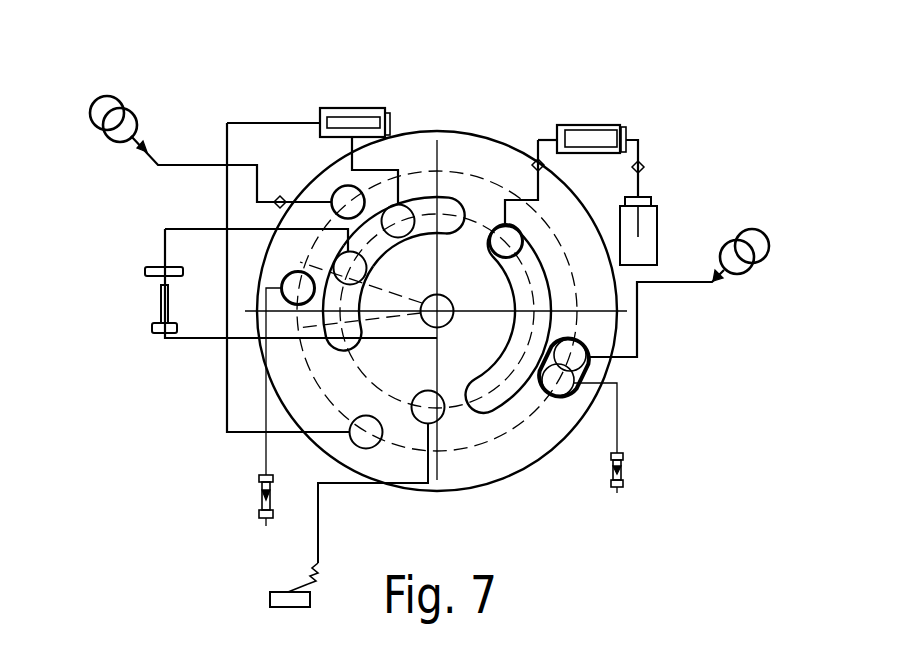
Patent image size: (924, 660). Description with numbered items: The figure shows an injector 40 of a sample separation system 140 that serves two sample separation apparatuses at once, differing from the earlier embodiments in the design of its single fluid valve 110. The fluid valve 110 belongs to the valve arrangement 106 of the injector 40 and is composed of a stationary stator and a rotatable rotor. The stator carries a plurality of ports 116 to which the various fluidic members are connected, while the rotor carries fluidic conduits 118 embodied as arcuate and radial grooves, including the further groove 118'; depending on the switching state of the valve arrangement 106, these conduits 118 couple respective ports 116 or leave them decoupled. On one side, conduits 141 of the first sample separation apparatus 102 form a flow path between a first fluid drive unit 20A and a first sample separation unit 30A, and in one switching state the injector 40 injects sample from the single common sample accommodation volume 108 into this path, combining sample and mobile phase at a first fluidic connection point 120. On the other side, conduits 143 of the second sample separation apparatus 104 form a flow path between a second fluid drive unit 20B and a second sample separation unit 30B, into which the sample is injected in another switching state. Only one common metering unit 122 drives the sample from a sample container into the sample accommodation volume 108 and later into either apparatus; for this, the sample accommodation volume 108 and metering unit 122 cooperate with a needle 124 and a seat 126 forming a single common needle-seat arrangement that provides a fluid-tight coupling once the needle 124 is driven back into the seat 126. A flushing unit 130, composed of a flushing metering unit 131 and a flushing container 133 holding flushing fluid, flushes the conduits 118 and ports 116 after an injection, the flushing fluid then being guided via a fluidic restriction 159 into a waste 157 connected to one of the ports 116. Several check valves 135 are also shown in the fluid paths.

The sample separation system 140 is at (97, 82).
The first fluid drive unit 20A is at (128, 108).
The first sample separation apparatus 102 is at (95, 138).
The conduits 141 is at (175, 167).
The second arcuate slot 118' is at (265, 273).
The check valves 135 is at (278, 198).
The ports 116 is at (390, 209).
The metering unit 122 is at (355, 108).
The valve arrangement 106 is at (467, 155).
The injector 40 is at (528, 92).
The flushing metering unit 131 is at (592, 138).
The flushing unit 130 is at (632, 120).
The second sample separation apparatus 104 is at (700, 150).
The fluid valve 110 is at (577, 190).
The flushing container 133 is at (648, 228).
The second fluid drive unit 20B is at (758, 236).
The conduits 143 is at (676, 282).
The first fluidic connection point 120 is at (264, 242).
The sample accommodation volume 108 is at (145, 272).
The needle 124 is at (160, 302).
The seat 126 is at (152, 328).
The fluidic conduits 118 is at (476, 305).
The fluidic restriction 159 is at (308, 572).
The waste 157 is at (275, 600).
The first sample separation unit 30A is at (260, 505).
The second sample separation unit 30B is at (623, 472).